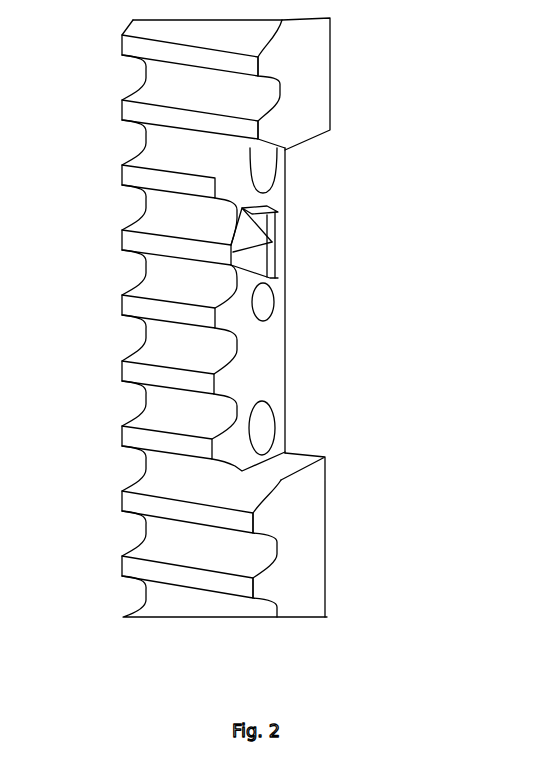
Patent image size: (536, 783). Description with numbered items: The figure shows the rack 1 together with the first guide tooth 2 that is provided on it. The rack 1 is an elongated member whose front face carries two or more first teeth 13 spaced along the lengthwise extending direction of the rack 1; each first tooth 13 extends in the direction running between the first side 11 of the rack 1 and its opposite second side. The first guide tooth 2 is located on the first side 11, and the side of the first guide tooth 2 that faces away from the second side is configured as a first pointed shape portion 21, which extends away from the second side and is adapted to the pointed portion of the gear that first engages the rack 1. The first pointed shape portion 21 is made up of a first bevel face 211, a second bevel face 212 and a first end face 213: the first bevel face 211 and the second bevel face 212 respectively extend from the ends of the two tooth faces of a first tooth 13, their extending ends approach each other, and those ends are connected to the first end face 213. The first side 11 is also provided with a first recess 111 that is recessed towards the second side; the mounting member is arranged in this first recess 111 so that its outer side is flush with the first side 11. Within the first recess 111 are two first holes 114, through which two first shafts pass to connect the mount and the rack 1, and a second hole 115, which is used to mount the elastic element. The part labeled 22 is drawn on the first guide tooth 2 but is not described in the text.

The rack 1 is at (247, 317).
The first side 11 is at (310, 494).
The first recess 111 is at (272, 348).
The first holes 114 is at (262, 173).
The second hole 115 is at (263, 305).
The first teeth 13 is at (132, 108).
The first guide tooth 2 is at (353, 233).
The first pointed shape portion 21 is at (326, 254).
The first bevel face 211 is at (262, 238).
The second bevel face 212 is at (294, 282).
The first end face 213 is at (258, 262).
The top surface 22 is at (280, 214).